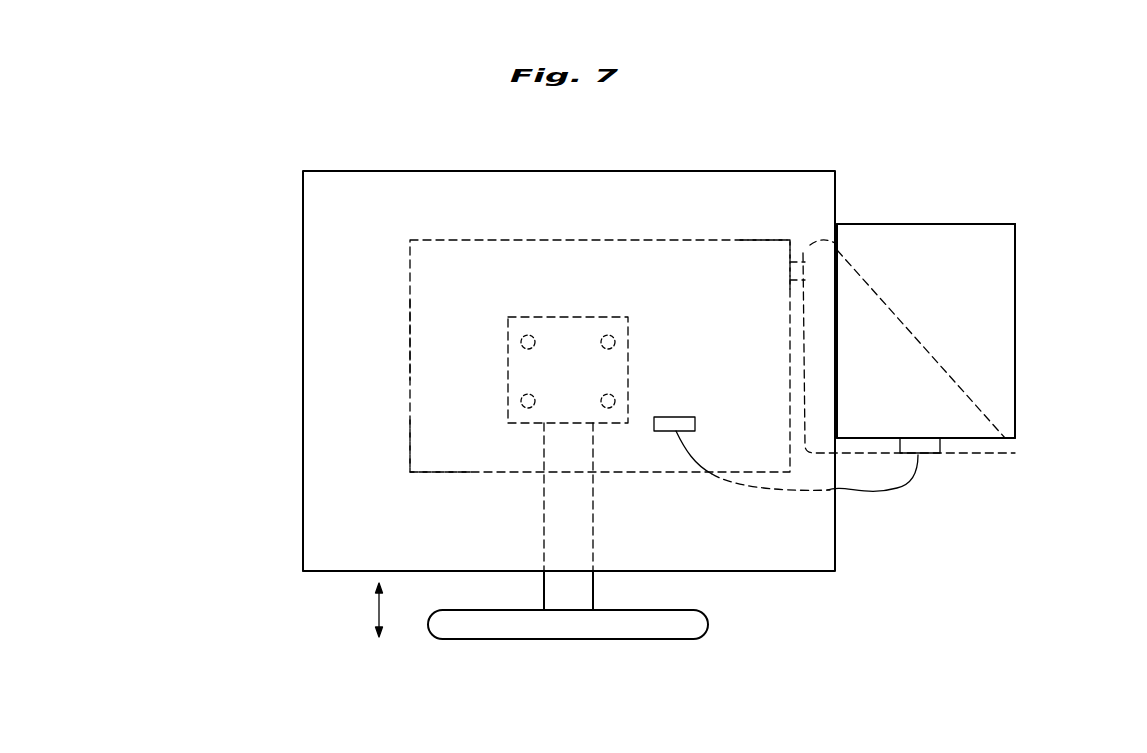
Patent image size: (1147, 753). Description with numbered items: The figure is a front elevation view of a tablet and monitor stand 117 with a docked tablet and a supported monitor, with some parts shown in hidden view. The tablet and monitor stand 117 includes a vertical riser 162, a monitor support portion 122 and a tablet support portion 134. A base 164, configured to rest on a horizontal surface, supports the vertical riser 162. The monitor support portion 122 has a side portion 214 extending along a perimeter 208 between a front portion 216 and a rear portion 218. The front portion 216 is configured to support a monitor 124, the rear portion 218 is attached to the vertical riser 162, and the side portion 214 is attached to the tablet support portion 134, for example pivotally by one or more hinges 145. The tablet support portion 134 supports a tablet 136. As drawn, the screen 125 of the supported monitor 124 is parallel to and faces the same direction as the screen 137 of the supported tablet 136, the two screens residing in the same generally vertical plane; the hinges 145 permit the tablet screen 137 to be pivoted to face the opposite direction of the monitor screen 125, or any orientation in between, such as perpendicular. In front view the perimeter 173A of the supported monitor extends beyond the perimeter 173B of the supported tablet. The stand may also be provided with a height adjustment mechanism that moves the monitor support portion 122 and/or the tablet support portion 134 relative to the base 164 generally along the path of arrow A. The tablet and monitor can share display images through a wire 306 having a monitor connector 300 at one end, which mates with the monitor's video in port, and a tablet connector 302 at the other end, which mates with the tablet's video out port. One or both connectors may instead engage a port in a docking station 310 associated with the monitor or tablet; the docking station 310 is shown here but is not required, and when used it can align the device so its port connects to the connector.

The tablet and monitor stand 117 is at (932, 125).
The monitor support portion 122 is at (410, 440).
The monitor 124 is at (303, 199).
The screen 125 is at (345, 540).
The tablet support portion 134 is at (856, 348).
The tablet 136 is at (1015, 318).
The screen 137 is at (1000, 357).
The hinges 145 is at (803, 253).
The vertical riser 162 is at (593, 590).
The base 164 is at (667, 628).
The perimeter 173A is at (612, 171).
The perimeter 173B is at (1015, 268).
The perimeter 208 is at (524, 240).
The side portion 214 is at (790, 250).
The front portion 216 is at (398, 332).
The rear portion 218 is at (505, 306).
The monitor connector 300 is at (670, 417).
The tablet connector 302 is at (928, 453).
The wire 306 is at (762, 500).
The docking station 310 is at (887, 305).
The arrow A is at (376, 612).